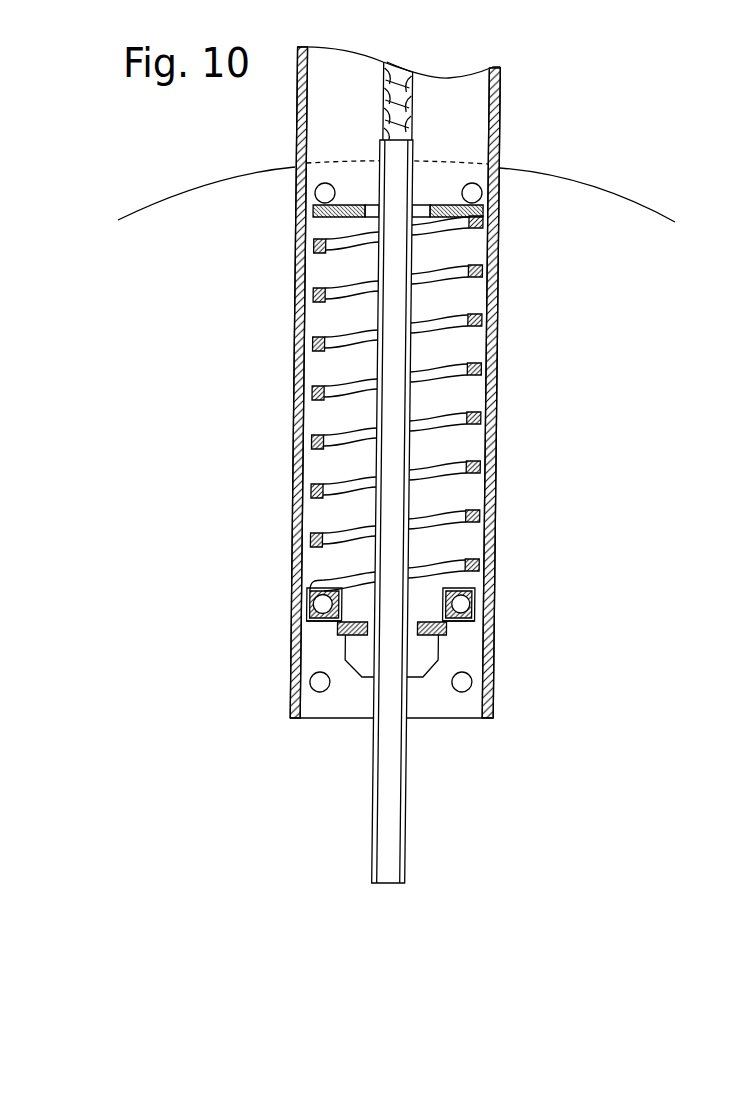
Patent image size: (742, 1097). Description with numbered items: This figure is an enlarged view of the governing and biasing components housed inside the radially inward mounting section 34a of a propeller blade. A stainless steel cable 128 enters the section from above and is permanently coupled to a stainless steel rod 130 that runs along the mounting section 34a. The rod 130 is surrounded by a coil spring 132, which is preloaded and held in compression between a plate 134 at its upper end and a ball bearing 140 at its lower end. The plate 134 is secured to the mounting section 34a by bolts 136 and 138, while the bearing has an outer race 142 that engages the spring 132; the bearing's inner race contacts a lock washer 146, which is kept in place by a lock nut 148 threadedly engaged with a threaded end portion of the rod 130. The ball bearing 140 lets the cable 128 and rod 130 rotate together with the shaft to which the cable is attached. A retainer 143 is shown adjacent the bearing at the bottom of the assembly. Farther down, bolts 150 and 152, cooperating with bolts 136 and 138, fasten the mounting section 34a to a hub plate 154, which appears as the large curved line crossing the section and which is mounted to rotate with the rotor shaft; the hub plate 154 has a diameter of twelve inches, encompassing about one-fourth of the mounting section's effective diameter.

The mounting section 34a is at (293, 330).
The cable 128 is at (422, 100).
The rod 130 is at (376, 352).
The coil spring 132 is at (483, 369).
The plate 134 is at (484, 215).
The bolt 136 is at (314, 191).
The bolt 138 is at (481, 193).
The ball bearing 140 is at (320, 600).
The outer race 142 is at (470, 584).
The bearing retainer 143 is at (460, 622).
The lock washer 146 is at (338, 628).
The lock nut 148 is at (362, 665).
The bolt 150 is at (318, 683).
The bolt 152 is at (462, 686).
The hub plate 154 is at (641, 204).